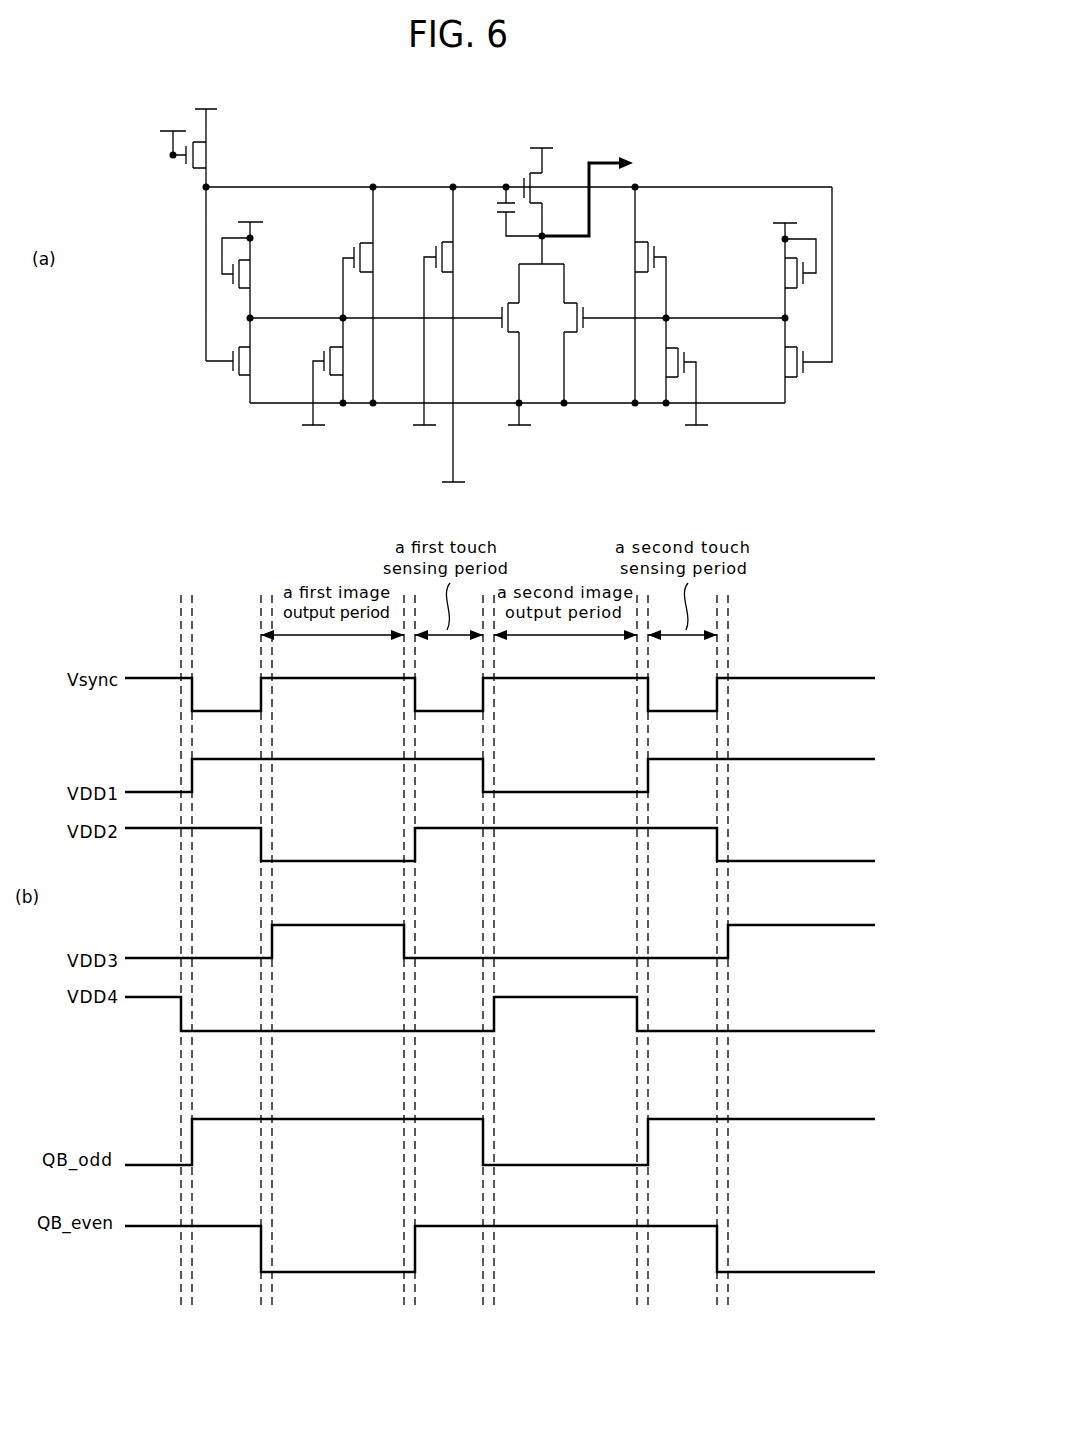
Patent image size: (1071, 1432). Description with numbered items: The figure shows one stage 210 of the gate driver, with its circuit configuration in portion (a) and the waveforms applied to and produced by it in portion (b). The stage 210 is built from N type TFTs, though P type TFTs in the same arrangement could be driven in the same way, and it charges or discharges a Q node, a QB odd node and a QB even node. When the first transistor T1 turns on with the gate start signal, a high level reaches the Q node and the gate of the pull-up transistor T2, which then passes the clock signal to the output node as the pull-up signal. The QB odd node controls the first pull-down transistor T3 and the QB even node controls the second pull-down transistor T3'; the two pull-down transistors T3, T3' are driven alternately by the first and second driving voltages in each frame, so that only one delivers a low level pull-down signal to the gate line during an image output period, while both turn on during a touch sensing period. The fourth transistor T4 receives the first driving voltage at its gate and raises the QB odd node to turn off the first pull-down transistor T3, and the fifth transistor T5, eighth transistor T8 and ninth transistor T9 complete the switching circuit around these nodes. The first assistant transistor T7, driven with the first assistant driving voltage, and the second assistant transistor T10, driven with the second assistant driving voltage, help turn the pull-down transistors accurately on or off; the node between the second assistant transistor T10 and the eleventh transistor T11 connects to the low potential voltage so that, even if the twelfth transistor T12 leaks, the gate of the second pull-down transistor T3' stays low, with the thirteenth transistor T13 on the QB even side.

The stage 210 is at (137, 84).
The first transistor T1 is at (200, 155).
The pull-up transistor T2 is at (539, 188).
The first pull-down transistor T3 is at (517, 317).
The second pull-down transistor T3' is at (563, 317).
The fourth transistor T4 is at (245, 263).
The fifth transistor T5 is at (238, 361).
The first assistant transistor T7 is at (337, 386).
The eighth transistor T8 is at (366, 280).
The ninth transistor T9 is at (448, 333).
The second assistant transistor T10 is at (668, 386).
The eleventh transistor T11 is at (641, 280).
The twelfth transistor T12 is at (786, 263).
The thirteenth transistor T13 is at (794, 282).